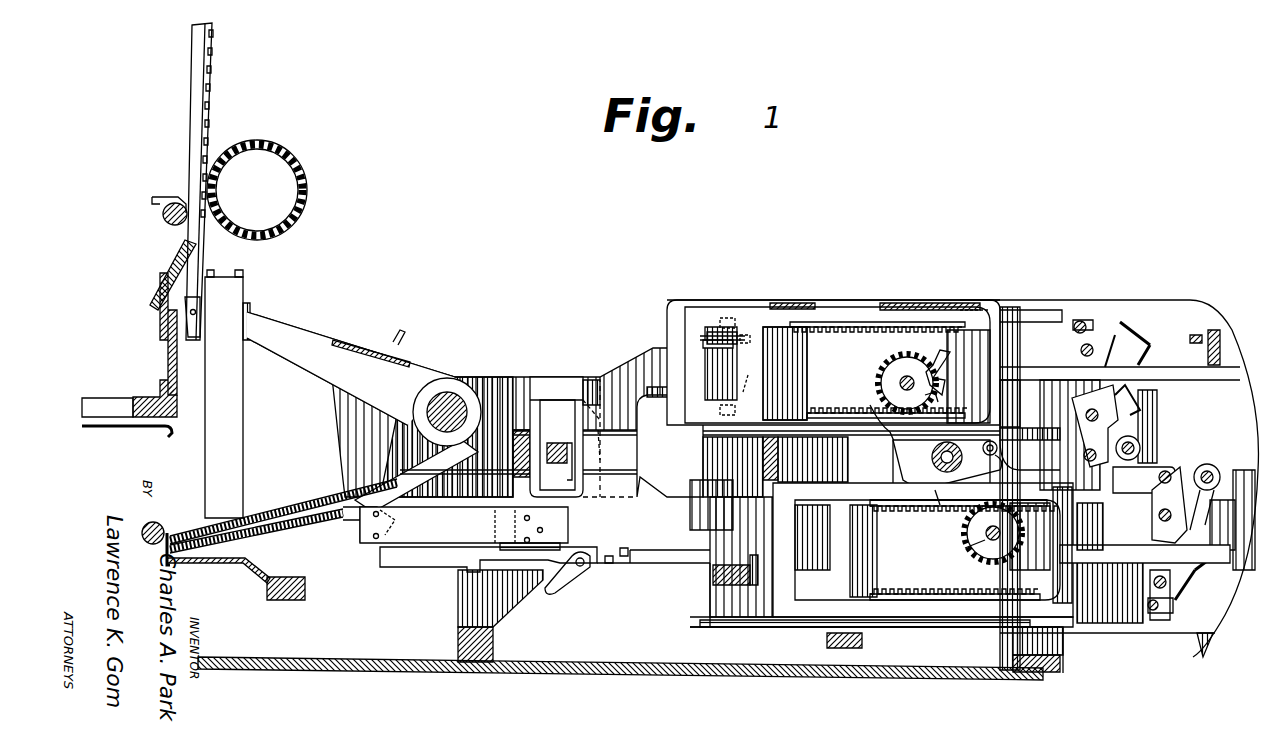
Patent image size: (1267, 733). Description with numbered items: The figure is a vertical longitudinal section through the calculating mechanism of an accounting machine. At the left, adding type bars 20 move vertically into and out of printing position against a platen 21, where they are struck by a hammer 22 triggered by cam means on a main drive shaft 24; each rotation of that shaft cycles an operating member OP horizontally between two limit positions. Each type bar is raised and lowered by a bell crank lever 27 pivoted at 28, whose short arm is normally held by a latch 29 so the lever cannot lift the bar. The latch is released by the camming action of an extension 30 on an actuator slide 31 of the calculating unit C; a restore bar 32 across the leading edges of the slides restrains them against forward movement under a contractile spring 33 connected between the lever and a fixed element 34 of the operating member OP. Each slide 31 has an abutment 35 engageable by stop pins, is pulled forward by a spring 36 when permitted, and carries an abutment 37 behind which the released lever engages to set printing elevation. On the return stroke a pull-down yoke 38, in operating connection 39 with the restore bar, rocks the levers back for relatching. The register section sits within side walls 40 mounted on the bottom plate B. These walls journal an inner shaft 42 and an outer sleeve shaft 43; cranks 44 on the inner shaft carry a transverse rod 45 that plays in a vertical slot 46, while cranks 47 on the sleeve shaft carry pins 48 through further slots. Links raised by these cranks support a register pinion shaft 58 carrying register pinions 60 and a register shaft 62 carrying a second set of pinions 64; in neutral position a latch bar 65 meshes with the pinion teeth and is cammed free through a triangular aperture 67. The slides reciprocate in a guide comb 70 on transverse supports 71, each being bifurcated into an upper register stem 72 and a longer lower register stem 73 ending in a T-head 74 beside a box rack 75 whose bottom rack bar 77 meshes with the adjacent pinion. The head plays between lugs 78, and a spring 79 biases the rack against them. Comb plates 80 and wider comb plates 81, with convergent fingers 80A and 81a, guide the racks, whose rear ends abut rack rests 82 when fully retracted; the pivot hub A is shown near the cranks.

The type bar 20 is at (196, 62).
The platen 21 is at (302, 164).
The hammer 22 is at (163, 219).
The main drive shaft 24 is at (160, 524).
The bell crank lever 27 is at (300, 323).
The pivot 28 is at (448, 398).
The latch 29 is at (424, 562).
The extension 30 is at (464, 525).
The actuator slide 31 is at (602, 413).
The restore bar 32 is at (557, 465).
The contractile spring 33 is at (296, 508).
The fixed element 34 is at (233, 563).
The abutment 35 is at (603, 560).
The contractile spring 36 is at (296, 533).
The abutment 37 is at (360, 524).
The pull-down yoke 38 is at (373, 338).
The operating connection 39 is at (416, 476).
The side wall 40 is at (738, 302).
The inner shaft 42 is at (955, 507).
The outer sleeve shaft 43 is at (932, 506).
The crank 44 is at (899, 468).
The transverse rod 45 is at (900, 452).
The vertical slot 46 is at (879, 425).
The crank 47 is at (1030, 428).
The pin 48 is at (994, 456).
The register pinion shaft 58 is at (914, 397).
The register pinion 60 is at (877, 339).
The register shaft 62 is at (985, 532).
The register pinion 64 is at (978, 541).
The latch bar 65 is at (933, 378).
The triangular aperture 67 is at (943, 358).
The guide comb 70 is at (676, 436).
The transverse support 71 is at (520, 432).
The upper register stem 72 is at (712, 365).
The lower register stem 73 is at (722, 554).
The T-head 74 is at (757, 356).
The box rack 75 is at (693, 396).
The bottom rack bar 77 is at (935, 596).
The lug 78 is at (795, 437).
The contractile spring 79 is at (720, 332).
The comb plate 80 is at (776, 304).
The finger 80A is at (810, 422).
The comb plate 81 is at (960, 308).
The finger 81a is at (976, 318).
The rack rest 82 is at (1107, 435).
The pivot hub A is at (940, 472).
The bottom plate B is at (707, 677).
The calculating unit C is at (976, 300).
The operating member OP is at (306, 589).